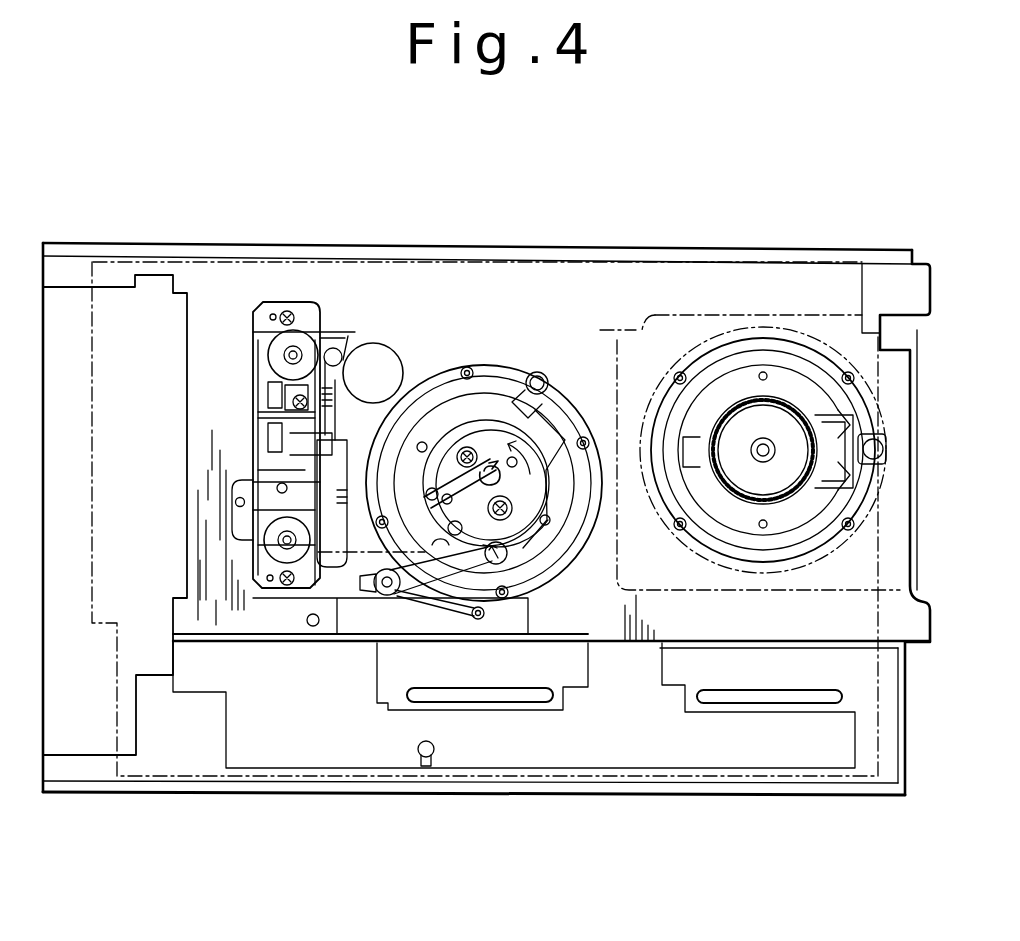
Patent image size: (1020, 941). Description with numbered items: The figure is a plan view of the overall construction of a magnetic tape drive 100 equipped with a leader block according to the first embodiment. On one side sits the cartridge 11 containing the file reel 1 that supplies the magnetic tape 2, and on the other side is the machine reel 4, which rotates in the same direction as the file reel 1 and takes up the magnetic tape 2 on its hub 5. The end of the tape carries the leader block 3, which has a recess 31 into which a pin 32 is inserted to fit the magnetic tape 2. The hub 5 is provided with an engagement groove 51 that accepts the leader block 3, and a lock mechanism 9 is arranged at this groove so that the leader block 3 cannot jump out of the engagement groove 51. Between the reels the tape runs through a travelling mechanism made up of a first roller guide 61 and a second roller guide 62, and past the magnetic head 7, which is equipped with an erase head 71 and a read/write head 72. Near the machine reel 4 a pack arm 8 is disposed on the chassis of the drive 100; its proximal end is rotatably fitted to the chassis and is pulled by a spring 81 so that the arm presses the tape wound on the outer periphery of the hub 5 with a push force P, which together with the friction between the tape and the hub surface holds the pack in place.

The magnetic tape drive 100 is at (714, 798).
The file reel 1 is at (783, 490).
The cartridge 11 is at (790, 302).
The magnetic tape 2 is at (624, 392).
The leader block 3 is at (468, 500).
The recess 31 is at (480, 452).
The pin 32 is at (464, 450).
The machine reel 4 is at (422, 422).
The hub 5 is at (517, 522).
The engagement groove 51 is at (538, 372).
The first roller guide 61 is at (281, 352).
The second roller guide 62 is at (292, 560).
The magnetic head 7 is at (214, 196).
The erase head 71 is at (256, 372).
The read/write head 72 is at (258, 432).
The pack arm 8 is at (443, 578).
The spring 81 is at (474, 618).
The lock mechanism 9 is at (493, 460).
The push force P is at (540, 590).